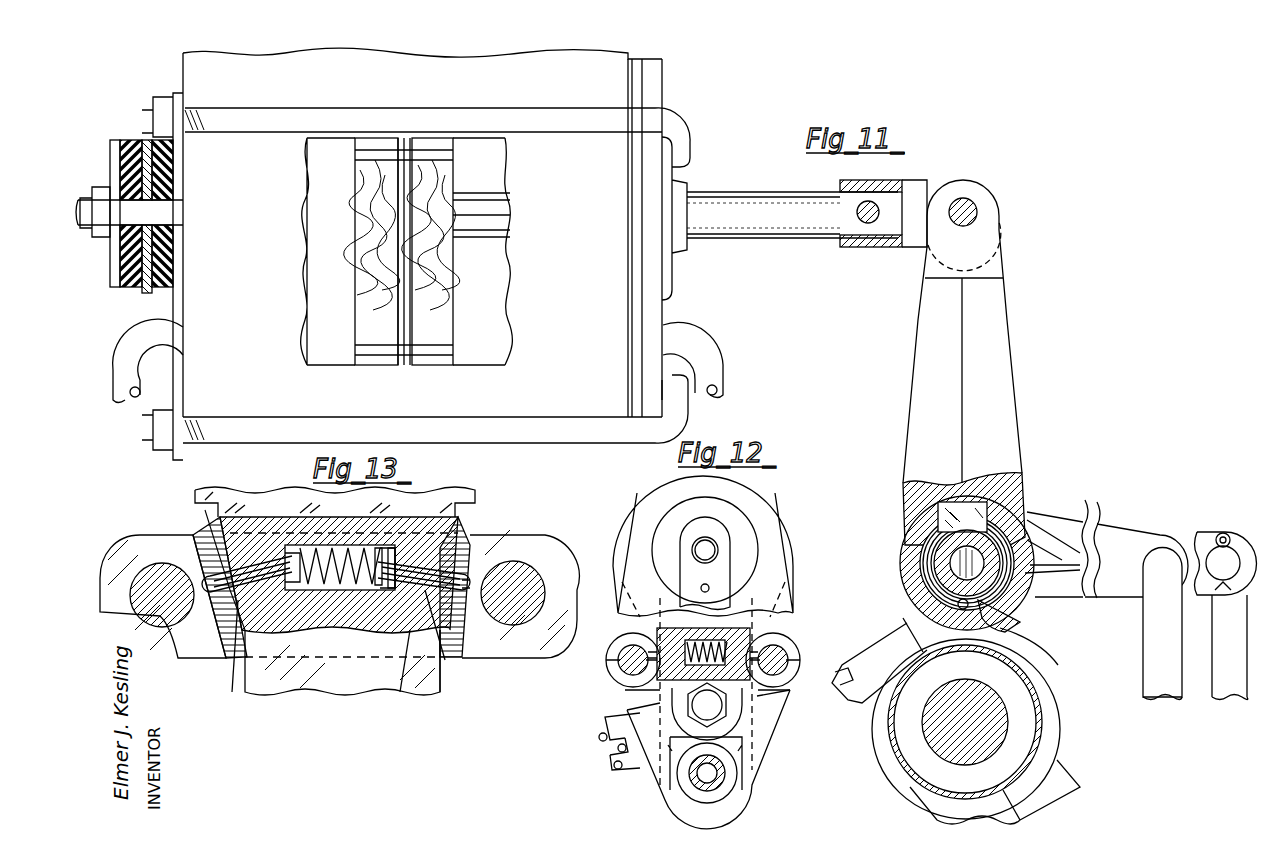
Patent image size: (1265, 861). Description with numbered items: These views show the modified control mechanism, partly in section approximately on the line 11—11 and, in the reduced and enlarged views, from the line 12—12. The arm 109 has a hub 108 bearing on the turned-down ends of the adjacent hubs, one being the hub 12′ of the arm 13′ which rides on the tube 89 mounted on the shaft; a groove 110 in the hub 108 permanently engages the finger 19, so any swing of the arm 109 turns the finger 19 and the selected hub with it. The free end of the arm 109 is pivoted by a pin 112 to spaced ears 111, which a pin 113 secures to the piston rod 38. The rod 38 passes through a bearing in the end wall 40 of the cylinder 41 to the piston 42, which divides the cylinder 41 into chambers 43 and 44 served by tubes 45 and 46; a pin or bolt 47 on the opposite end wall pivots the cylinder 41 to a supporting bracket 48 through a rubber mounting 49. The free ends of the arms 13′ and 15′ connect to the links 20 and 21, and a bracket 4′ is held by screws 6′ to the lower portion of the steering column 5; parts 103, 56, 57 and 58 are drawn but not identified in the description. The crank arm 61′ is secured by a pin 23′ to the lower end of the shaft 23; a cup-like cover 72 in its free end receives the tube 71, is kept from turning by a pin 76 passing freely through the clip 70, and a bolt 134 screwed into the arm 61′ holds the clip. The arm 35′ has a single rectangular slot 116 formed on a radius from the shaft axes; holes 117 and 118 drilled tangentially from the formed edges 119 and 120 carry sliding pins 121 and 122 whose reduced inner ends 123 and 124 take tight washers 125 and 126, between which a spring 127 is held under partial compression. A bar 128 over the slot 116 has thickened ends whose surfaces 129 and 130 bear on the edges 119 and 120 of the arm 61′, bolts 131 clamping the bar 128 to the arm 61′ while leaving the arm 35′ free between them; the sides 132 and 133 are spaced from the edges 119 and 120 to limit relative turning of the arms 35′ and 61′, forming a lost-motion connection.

In FIG. 11, the piston rod 38 is at (790, 225).
In FIG. 11, the end wall 40 is at (665, 305).
In FIG. 11, the cylinder 41 is at (612, 415).
In FIG. 11, the piston 42 is at (418, 360).
In FIG. 11, the chamber 43 is at (305, 218).
In FIG. 11, the chamber 44 is at (495, 178).
In FIG. 11, the tube 45 is at (118, 388).
In FIG. 11, the tube 46 is at (722, 372).
In FIG. 11, the pin or bolt 47 is at (93, 232).
In FIG. 11, the supporting bracket 48 is at (135, 292).
In FIG. 11, the rubber mounting 49 is at (138, 290).
In FIG. 11, the hub 108 is at (1010, 500).
In FIG. 11, the arm 109 is at (995, 368).
In FIG. 11, the groove 110 is at (948, 490).
In FIG. 11, the spaced ears 111 is at (930, 188).
In FIG. 11, the pin 112 is at (972, 202).
In FIG. 11, the pin 113 is at (862, 225).
In FIG. 11, the finger 19 is at (936, 508).
In FIG. 11, the shaft 23 is at (950, 560).
In FIG. 12, the shaft 23 is at (700, 778).
In FIG. 11, the hub 12′ is at (922, 570).
In FIG. 11, the tube 89 is at (915, 600).
In FIG. 11, the bracket 4′ is at (880, 640).
In FIG. 11, the screws 6′ is at (846, 690).
In FIG. 11, the bearing 12 is at (1022, 552).
In FIG. 11, the lock 103 is at (1012, 614).
In FIG. 11, the steering column 5 is at (1045, 738).
In FIG. 11, the link 20 is at (1150, 665).
In FIG. 11, the link 21 is at (1222, 680).
In FIG. 11, the arm 13′ is at (1103, 522).
In FIG. 11, the arm 15′ is at (1205, 538).
In FIG. 12, the cup-like cover 72 is at (690, 512).
In FIG. 12, the tube 71 is at (710, 543).
In FIG. 12, the clip 70 is at (715, 572).
In FIG. 12, the arm 35′ is at (790, 535).
In FIG. 12, the pin 76 is at (700, 590).
In FIG. 12, the slot 116 is at (690, 640).
In FIG. 13, the slot 116 is at (342, 590).
In FIG. 12, the spring 127 is at (728, 632).
In FIG. 13, the spring 127 is at (328, 640).
In FIG. 12, the arm 61′ is at (775, 602).
In FIG. 12, the side 133 is at (765, 635).
In FIG. 13, the side 133 is at (475, 560).
In FIG. 12, the side 132 is at (650, 638).
In FIG. 13, the side 132 is at (180, 540).
In FIG. 12, the pin 122 is at (773, 648).
In FIG. 13, the pin 122 is at (462, 630).
In FIG. 12, the formed edge 120 is at (615, 652).
In FIG. 13, the formed edge 120 is at (455, 560).
In FIG. 12, the bolts 131 is at (620, 662).
In FIG. 13, the bolts 131 is at (162, 585).
In FIG. 12, the surface 129 is at (620, 680).
In FIG. 13, the surface 129 is at (138, 540).
In FIG. 12, the surface 130 is at (785, 680).
In FIG. 13, the surface 130 is at (548, 595).
In FIG. 12, the pin 121 is at (640, 690).
In FIG. 13, the pin 121 is at (232, 530).
In FIG. 12, the bolt 134 is at (730, 710).
In FIG. 12, the pin 23′ is at (745, 752).
In FIG. 12, the pin 11 is at (740, 775).
In FIG. 12, the bracket 57 is at (605, 722).
In FIG. 12, the bracket 56 is at (618, 745).
In FIG. 12, the bracket 58 is at (612, 765).
In FIG. 13, the formed edge 119 is at (200, 515).
In FIG. 13, the hole 117 is at (248, 517).
In FIG. 13, the reduced inner end 123 is at (290, 545).
In FIG. 13, the reduced inner end 124 is at (388, 545).
In FIG. 13, the washer 126 is at (455, 540).
In FIG. 13, the washer 125 is at (282, 570).
In FIG. 13, the hole 118 is at (415, 680).
In FIG. 13, the bar 128 is at (445, 650).